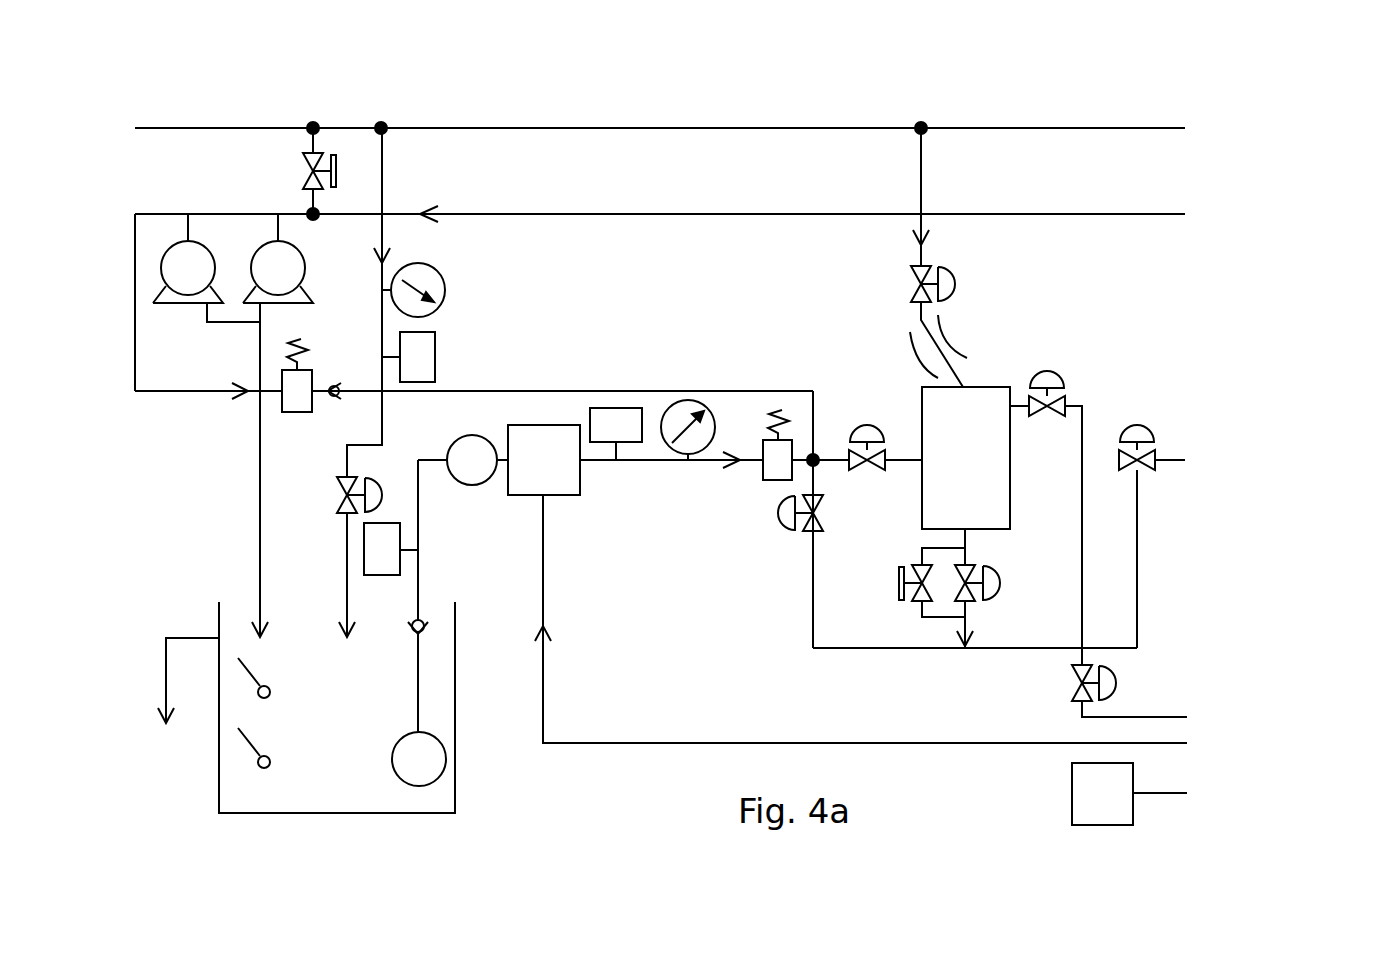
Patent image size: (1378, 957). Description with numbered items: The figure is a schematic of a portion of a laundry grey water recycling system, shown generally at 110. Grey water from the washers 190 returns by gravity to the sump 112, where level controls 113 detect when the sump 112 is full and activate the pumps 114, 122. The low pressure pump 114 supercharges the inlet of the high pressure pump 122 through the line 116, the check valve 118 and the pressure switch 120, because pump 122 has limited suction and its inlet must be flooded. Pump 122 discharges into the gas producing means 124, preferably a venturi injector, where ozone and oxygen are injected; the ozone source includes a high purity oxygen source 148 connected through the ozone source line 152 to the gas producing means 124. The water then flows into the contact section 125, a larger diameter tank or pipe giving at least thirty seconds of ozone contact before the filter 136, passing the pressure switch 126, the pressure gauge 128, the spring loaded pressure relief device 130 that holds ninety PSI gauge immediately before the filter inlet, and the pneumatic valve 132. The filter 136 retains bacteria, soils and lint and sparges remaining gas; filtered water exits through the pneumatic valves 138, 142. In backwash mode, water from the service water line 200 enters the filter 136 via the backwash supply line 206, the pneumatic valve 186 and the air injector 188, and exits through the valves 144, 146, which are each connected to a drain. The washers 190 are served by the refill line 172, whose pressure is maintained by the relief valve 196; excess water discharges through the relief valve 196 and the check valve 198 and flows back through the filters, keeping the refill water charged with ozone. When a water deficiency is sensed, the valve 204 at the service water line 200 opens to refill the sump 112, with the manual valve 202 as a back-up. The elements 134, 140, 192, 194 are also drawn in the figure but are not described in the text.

The present invention 110 is at (1222, 113).
The sump 112 is at (387, 814).
The level controls 113 is at (272, 760).
The pump 114 is at (447, 763).
The line 116 is at (420, 686).
The check valve 118 is at (423, 617).
The pressure switch 120 is at (401, 563).
The pump 122 is at (447, 476).
The gas producing means 124 is at (581, 474).
The contact section 125 is at (738, 498).
The pressure switch 126 is at (612, 408).
The pressure gauge 128 is at (699, 404).
The pressure relief device 130 is at (793, 440).
The pneumatic valve 132 is at (863, 470).
The control valve 134 is at (784, 533).
The filter 136 is at (985, 473).
The pneumatic valve 138 is at (1047, 371).
The control valve 140 is at (1120, 676).
The pneumatic valve 142 is at (1137, 424).
The valve 144 is at (898, 597).
The valve 146 is at (1001, 578).
The high purity oxygen source 148 is at (1095, 826).
The ozone source line 152 is at (686, 742).
The refill line 172 is at (556, 213).
The pneumatic valve 186 is at (957, 276).
The air injector 188 is at (947, 331).
The washer 190 is at (203, 322).
The pressure gauge 192 is at (436, 272).
The sensor 194 is at (436, 349).
The relief valve 196 is at (280, 413).
The check valve 198 is at (334, 397).
The service water line 200 is at (766, 127).
The manual valve 202 is at (303, 171).
The valve 204 is at (336, 498).
The backwash supply line 206 is at (922, 179).